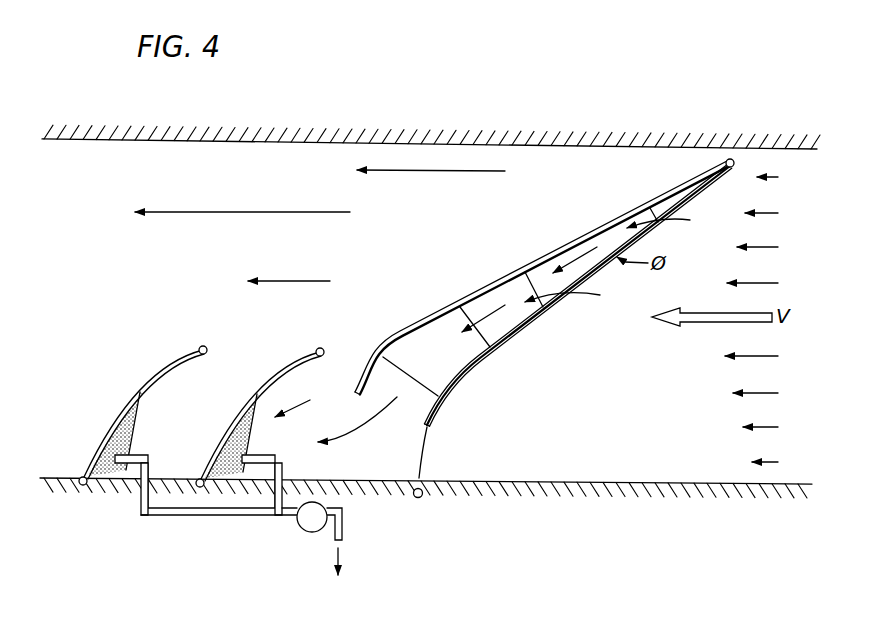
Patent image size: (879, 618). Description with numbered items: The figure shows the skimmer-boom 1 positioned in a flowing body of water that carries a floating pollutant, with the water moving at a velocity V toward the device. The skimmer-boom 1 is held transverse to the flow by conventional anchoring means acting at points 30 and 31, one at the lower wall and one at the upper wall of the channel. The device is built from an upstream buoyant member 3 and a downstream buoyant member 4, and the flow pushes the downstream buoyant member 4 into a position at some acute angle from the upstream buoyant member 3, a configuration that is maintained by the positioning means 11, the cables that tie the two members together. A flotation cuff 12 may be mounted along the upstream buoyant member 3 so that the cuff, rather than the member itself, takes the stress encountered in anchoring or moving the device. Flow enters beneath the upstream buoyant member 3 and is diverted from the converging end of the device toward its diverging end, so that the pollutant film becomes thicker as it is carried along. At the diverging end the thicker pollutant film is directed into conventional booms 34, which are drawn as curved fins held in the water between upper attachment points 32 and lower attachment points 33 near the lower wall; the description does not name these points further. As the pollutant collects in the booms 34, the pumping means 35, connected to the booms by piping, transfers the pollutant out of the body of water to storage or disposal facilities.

The skimmer-boom device 1 is at (553, 248).
The upstream buoyant member 3 is at (484, 360).
The downstream buoyant member 4 is at (486, 285).
The positioning means 11 is at (456, 311).
The flotation cuff 12 is at (534, 322).
The anchoring point 30 is at (419, 498).
The anchoring point 31 is at (731, 158).
The fin tip pivot 32 is at (203, 345).
The fin base pivot 33 is at (83, 486).
The conventional booms 34 is at (138, 388).
The pumping means 35 is at (306, 530).